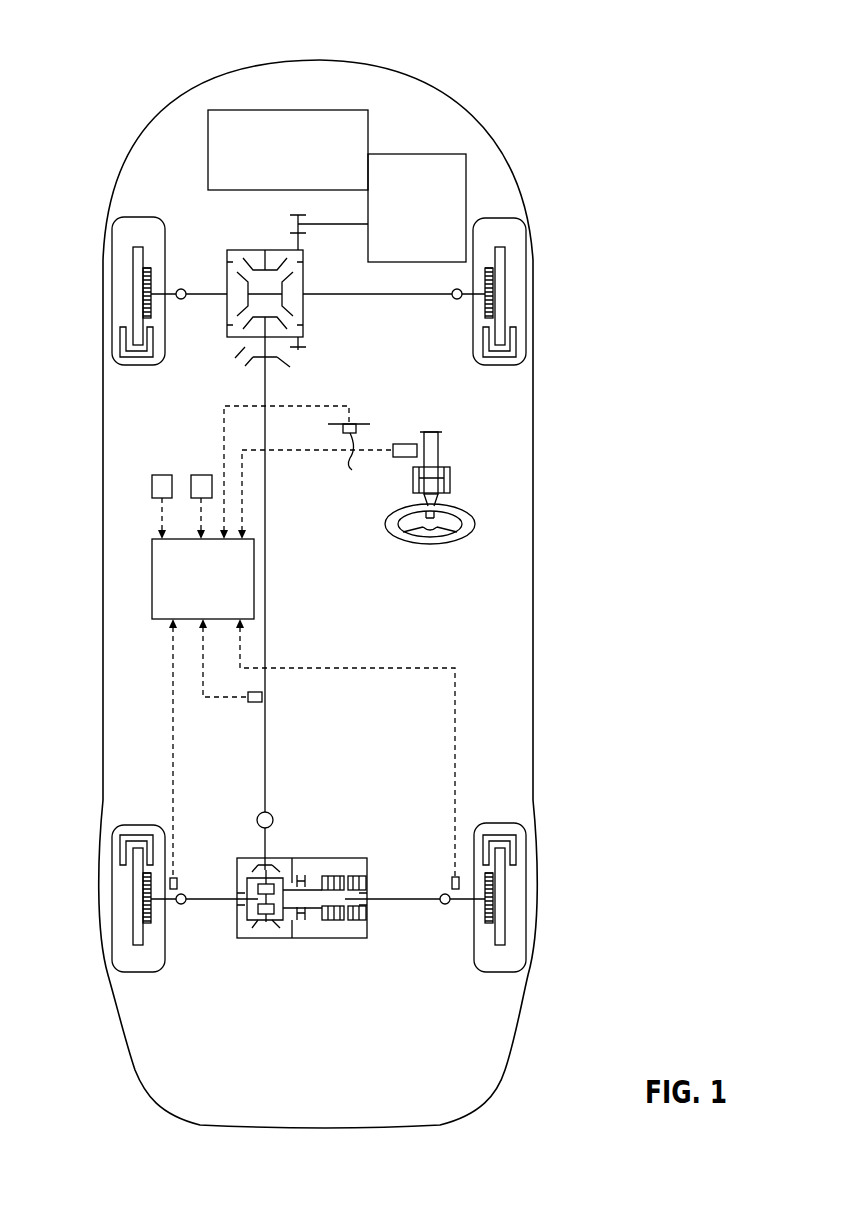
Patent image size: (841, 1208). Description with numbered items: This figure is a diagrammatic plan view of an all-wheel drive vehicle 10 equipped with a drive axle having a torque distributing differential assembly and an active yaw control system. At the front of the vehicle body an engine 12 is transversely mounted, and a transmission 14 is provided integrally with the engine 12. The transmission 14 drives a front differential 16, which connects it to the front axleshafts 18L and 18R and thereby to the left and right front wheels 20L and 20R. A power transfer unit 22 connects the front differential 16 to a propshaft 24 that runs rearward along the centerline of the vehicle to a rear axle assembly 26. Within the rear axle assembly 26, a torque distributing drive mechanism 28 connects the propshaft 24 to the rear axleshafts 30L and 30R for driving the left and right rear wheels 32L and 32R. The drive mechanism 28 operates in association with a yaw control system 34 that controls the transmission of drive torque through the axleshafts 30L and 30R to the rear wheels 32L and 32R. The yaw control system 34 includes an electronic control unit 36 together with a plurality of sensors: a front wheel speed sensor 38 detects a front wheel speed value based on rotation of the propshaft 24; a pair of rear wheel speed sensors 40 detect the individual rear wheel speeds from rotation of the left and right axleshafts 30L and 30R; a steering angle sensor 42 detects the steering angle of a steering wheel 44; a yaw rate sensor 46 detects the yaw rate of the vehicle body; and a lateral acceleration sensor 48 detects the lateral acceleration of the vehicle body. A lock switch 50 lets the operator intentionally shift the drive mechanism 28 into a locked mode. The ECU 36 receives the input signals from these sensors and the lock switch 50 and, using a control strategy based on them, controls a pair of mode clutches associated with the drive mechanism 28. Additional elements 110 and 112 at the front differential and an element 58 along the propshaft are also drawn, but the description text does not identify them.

The all-wheel drive vehicle 10 is at (550, 418).
The engine 12 is at (273, 120).
The transmission 14 is at (418, 165).
The front differential 16 is at (267, 294).
The left front axleshaft 18L is at (200, 294).
The right front axleshaft 18R is at (413, 294).
The left front wheel 20L is at (117, 220).
The right front wheel 20R is at (526, 220).
The power transfer unit 22 is at (230, 371).
The propshaft 24 is at (242, 597).
The rear axle assembly 26 is at (420, 828).
The torque distributing drive mechanism 28 is at (303, 960).
The left rear axleshaft 30L is at (203, 900).
The right rear axleshaft 30R is at (413, 900).
The left rear wheel 32L is at (112, 832).
The right rear wheel 32R is at (535, 822).
The yaw control system 34 is at (246, 642).
The electronic control unit 36 is at (165, 583).
The front wheel speed sensor 38 is at (250, 703).
The rear wheel speed sensor 40 is at (178, 883).
The steering angle sensor 42 is at (398, 446).
The steering wheel 44 is at (462, 527).
The yaw rate sensor 46 is at (203, 484).
The lateral acceleration sensor 48 is at (164, 484).
The lock switch 50 is at (349, 462).
The coupling 58 is at (270, 840).
The front differential 110 is at (272, 278).
The differential housing 112 is at (244, 250).